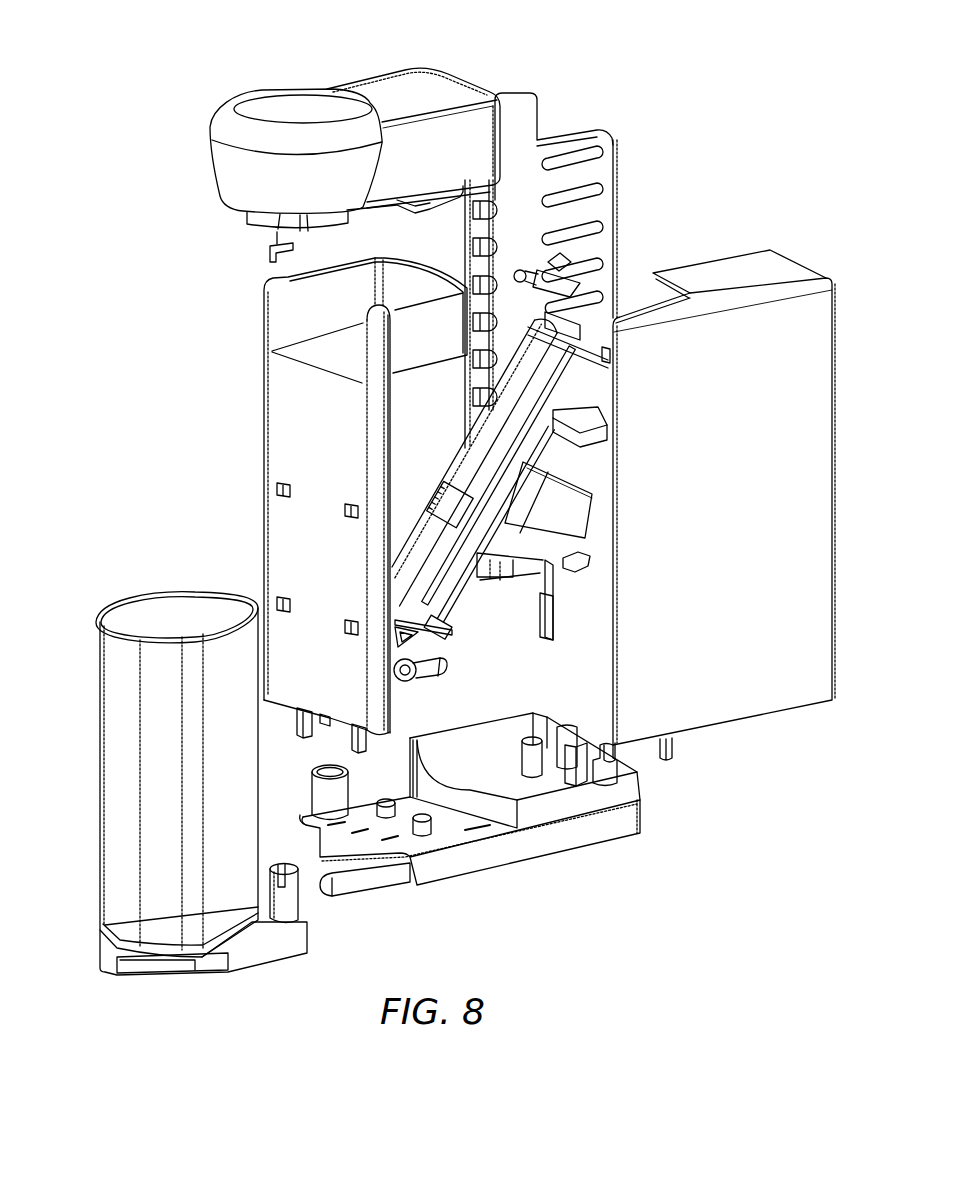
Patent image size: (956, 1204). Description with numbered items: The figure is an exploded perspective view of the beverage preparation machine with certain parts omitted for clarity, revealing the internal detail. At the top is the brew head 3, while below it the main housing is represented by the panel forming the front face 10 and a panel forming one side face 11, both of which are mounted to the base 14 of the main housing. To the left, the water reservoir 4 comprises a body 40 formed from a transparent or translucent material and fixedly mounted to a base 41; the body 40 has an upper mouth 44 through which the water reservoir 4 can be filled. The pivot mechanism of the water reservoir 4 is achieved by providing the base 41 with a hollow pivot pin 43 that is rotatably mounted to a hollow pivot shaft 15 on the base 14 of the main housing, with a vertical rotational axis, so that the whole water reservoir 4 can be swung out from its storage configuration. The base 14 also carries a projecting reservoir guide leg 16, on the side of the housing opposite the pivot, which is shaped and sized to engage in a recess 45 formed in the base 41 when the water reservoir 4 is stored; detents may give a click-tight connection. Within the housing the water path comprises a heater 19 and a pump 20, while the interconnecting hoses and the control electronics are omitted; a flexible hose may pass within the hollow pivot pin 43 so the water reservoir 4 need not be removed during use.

The brew head 3 is at (236, 80).
The front face 10 is at (272, 416).
The side face 11 is at (771, 707).
The base 14 is at (552, 843).
The hollow pivot shaft 15 is at (316, 795).
The reservoir guide leg 16 is at (380, 883).
The heater 19 is at (443, 580).
The pump 20 is at (567, 520).
The water reservoir 4 is at (95, 825).
The body 40 is at (101, 734).
The base 41 is at (105, 962).
The hollow pivot pin 43 is at (297, 903).
The upper mouth 44 is at (152, 608).
The recess 45 is at (165, 978).